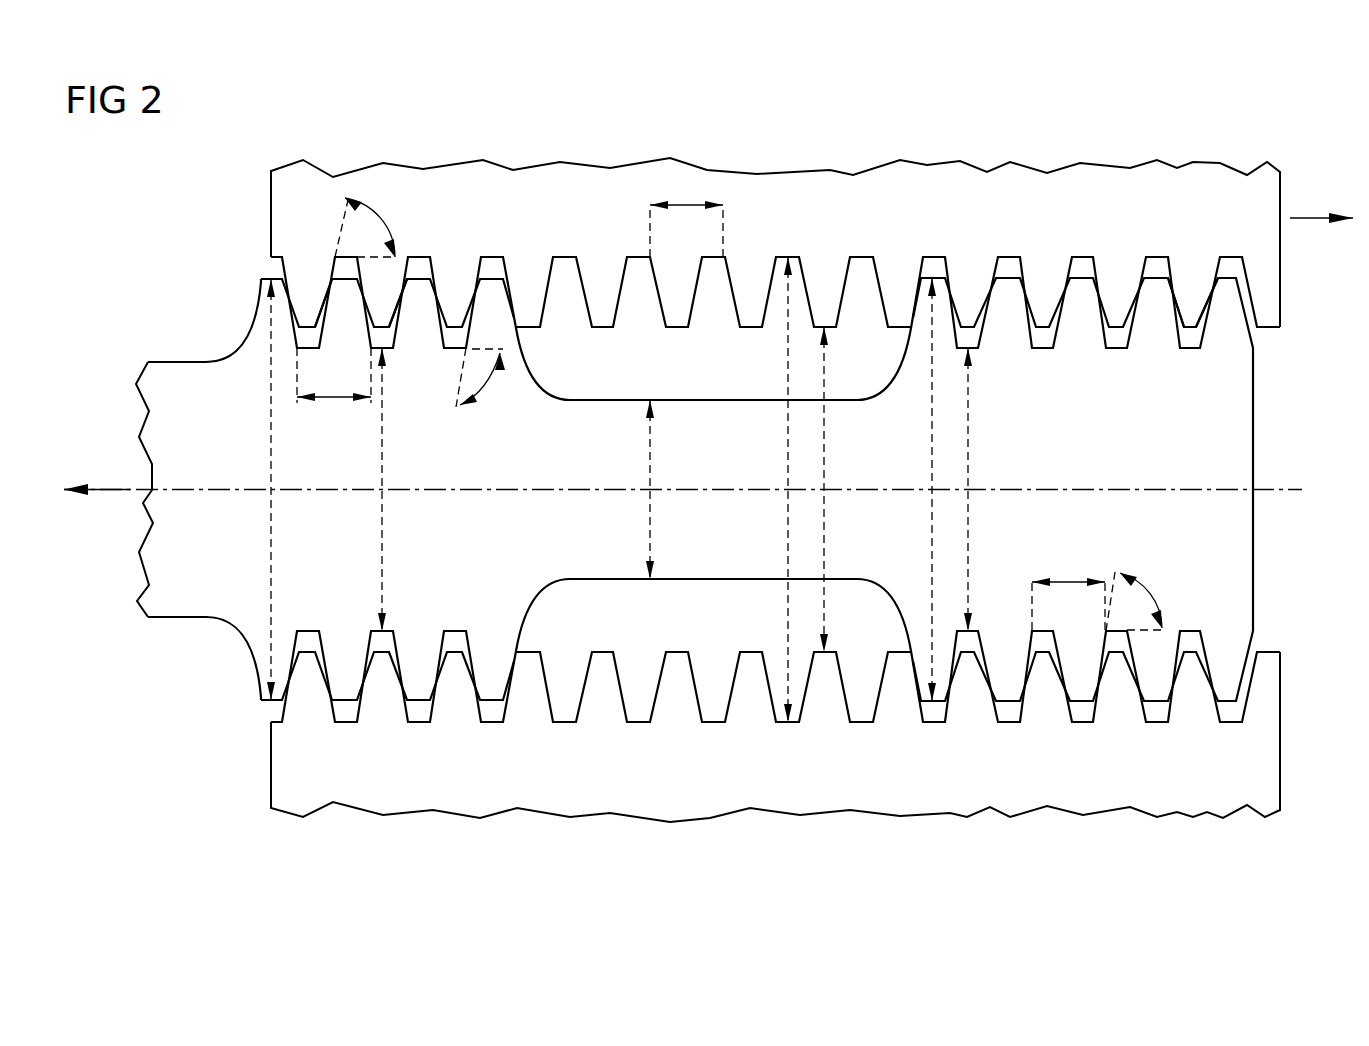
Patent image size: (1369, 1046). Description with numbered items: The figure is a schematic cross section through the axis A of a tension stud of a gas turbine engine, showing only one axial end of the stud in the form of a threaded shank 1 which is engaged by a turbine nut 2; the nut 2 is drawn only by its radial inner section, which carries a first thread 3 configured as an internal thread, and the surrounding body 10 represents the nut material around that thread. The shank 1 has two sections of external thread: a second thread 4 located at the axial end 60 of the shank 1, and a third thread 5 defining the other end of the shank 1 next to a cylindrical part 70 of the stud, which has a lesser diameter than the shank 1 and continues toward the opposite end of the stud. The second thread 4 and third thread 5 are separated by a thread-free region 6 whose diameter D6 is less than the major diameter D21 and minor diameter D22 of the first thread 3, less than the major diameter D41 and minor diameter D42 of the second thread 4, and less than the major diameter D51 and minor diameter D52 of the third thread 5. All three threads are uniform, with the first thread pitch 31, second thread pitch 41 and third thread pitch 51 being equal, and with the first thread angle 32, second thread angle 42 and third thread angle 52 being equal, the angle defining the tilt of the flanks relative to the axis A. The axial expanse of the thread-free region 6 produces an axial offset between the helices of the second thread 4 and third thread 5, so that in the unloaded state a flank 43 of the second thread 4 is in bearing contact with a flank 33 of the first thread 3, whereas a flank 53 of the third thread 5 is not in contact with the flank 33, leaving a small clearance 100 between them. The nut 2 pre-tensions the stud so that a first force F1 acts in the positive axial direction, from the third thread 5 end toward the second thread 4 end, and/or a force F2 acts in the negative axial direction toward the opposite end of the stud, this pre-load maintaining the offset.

The threaded shank 1 is at (732, 456).
The turbine nut 2 is at (713, 456).
The first thread 3 is at (603, 270).
The second thread 4 is at (996, 638).
The third thread 5 is at (336, 635).
The thread-free region 6 is at (704, 462).
The housing / nut 10 is at (1175, 120).
The first thread pitch 31 is at (686, 215).
The first thread angle 32 is at (373, 227).
The flank of the first thread 33 is at (327, 287).
The second thread pitch 41 is at (1068, 589).
The second thread angle 42 is at (1145, 599).
The flank of the second thread 43 is at (1203, 337).
The third thread pitch 51 is at (334, 375).
The third thread angle 52 is at (489, 381).
The flank of the third thread 53 is at (397, 333).
The axial end 60 is at (1255, 550).
The cylindrical part 70 is at (179, 379).
The clearance between thread profiles 100 is at (982, 292).
The major diameter of the third thread D51 is at (269, 489).
The minor diameter of the third thread D52 is at (381, 489).
The diameter of the thread-free region D6 is at (650, 489).
The major diameter of the first thread D21 is at (787, 489).
The minor diameter of the first thread D22 is at (825, 489).
The major diameter of the second thread D41 is at (931, 489).
The minor diameter of the second thread D42 is at (969, 489).
The axis A is at (1287, 490).
The first force F1 is at (1308, 217).
The force F2 is at (106, 486).